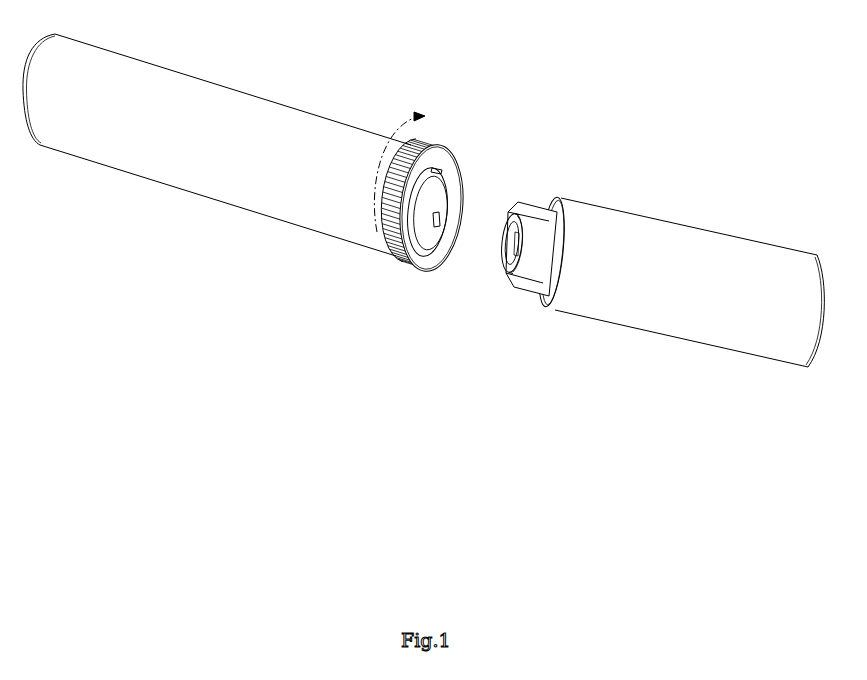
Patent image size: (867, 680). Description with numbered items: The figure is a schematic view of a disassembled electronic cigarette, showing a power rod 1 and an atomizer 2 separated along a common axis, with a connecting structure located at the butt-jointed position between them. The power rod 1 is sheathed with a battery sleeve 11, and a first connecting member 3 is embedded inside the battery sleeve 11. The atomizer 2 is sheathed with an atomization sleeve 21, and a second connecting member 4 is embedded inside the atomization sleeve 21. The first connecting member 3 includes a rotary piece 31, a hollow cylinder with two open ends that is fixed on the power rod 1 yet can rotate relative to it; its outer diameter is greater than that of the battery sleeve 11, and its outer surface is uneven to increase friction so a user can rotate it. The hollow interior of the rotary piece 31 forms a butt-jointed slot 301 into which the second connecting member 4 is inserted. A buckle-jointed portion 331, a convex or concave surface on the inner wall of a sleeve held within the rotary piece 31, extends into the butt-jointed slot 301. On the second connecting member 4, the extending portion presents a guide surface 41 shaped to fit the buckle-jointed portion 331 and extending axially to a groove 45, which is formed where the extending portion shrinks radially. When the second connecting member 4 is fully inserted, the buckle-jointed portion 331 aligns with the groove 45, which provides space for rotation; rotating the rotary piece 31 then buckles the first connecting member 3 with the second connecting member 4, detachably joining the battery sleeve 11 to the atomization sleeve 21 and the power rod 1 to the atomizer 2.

The power rod 1 is at (217, 135).
The battery sleeve 11 is at (298, 110).
The atomizer 2 is at (655, 255).
The atomization sleeve 21 is at (627, 213).
The first connecting member 3 is at (438, 207).
The rotary piece 31 is at (428, 147).
The butt-jointed slot 301 is at (433, 248).
The buckle-jointed portion 331 is at (444, 168).
The second connecting member 4 is at (534, 251).
The guide surface 41 is at (540, 208).
The groove 45 is at (545, 296).